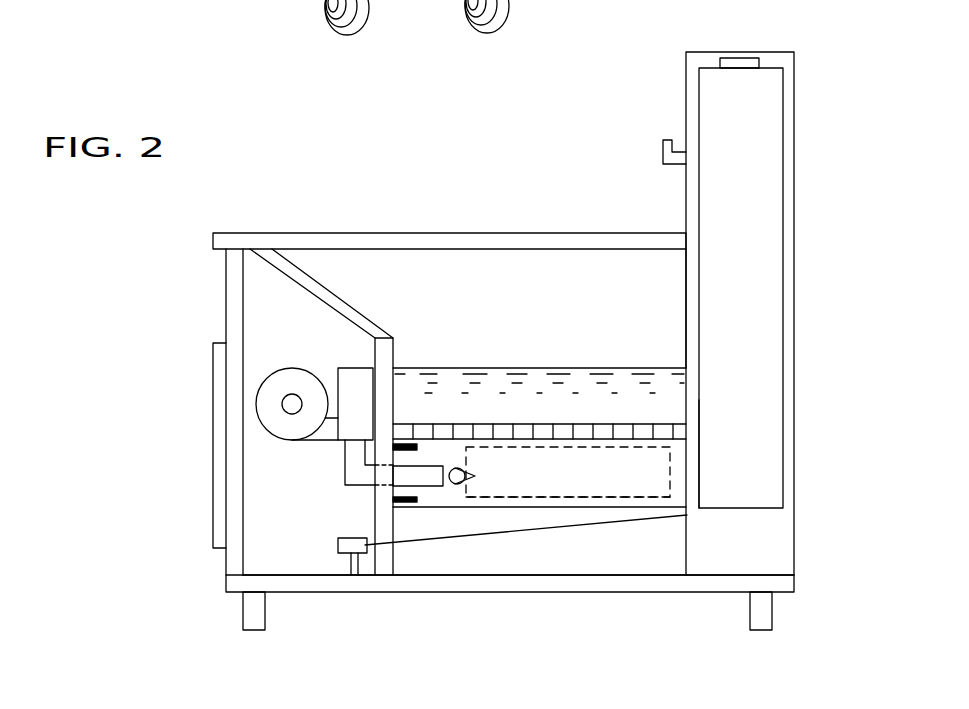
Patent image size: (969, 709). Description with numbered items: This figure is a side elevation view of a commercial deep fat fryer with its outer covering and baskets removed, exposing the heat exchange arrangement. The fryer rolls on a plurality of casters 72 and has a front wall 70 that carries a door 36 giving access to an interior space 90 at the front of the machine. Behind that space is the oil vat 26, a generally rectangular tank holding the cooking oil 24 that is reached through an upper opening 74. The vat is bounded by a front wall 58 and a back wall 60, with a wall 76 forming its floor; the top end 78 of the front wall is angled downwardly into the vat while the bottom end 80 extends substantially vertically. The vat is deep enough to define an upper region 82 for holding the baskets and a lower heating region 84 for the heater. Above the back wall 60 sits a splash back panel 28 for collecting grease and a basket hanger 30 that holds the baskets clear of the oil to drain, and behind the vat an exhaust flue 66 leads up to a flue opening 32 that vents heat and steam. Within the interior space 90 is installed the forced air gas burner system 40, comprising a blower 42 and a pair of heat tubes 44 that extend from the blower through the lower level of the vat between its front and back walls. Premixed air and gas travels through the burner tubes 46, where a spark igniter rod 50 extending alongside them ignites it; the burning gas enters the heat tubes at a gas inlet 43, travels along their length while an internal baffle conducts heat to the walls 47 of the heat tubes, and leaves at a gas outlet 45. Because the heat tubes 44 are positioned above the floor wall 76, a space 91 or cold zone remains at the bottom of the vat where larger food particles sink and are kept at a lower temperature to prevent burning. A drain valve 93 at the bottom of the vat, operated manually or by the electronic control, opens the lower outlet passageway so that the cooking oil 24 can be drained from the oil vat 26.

The cooking oil 24 is at (543, 368).
The oil vat 26 is at (455, 232).
The splash back panel 28 is at (690, 203).
The basket hanger 30 is at (665, 155).
The flue opening 32 is at (745, 62).
The door 36 is at (214, 430).
The forced air gas burner system 40 is at (648, 518).
The blower 42 is at (293, 383).
The gas inlet 43 is at (453, 488).
The heat tubes 44 is at (448, 498).
The gas outlet 45 is at (678, 490).
The burner tubes 46 is at (432, 475).
The walls of the heat tubes 47 is at (600, 507).
The spark igniter rod 50 is at (410, 443).
The front wall of the oil vat 58 is at (380, 517).
The back wall of the oil vat 60 is at (692, 300).
The exhaust flue 66 is at (760, 163).
The front wall of the fryer 70 is at (235, 273).
The casters 72 is at (250, 610).
The upper opening 74 is at (317, 213).
The floor wall of the oil vat 76 is at (577, 527).
The top end of the front wall 78 is at (300, 278).
The bottom end of the front wall 80 is at (375, 503).
The upper region 82 is at (664, 272).
The lower heating region 84 is at (702, 448).
The interior space 90 is at (300, 556).
The space 91 is at (418, 548).
The drain valve 93 is at (358, 547).